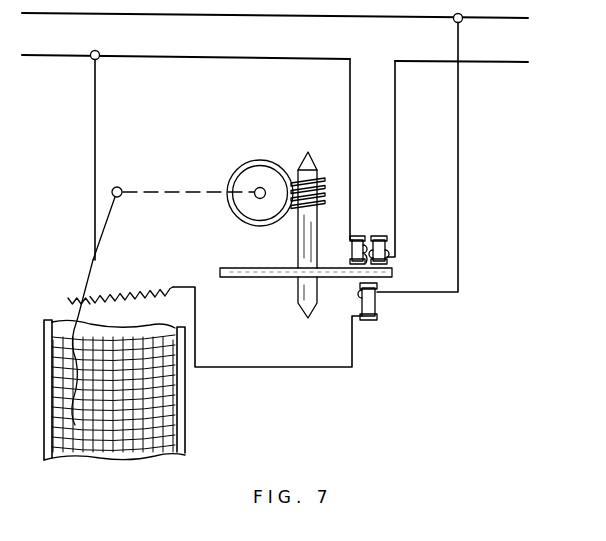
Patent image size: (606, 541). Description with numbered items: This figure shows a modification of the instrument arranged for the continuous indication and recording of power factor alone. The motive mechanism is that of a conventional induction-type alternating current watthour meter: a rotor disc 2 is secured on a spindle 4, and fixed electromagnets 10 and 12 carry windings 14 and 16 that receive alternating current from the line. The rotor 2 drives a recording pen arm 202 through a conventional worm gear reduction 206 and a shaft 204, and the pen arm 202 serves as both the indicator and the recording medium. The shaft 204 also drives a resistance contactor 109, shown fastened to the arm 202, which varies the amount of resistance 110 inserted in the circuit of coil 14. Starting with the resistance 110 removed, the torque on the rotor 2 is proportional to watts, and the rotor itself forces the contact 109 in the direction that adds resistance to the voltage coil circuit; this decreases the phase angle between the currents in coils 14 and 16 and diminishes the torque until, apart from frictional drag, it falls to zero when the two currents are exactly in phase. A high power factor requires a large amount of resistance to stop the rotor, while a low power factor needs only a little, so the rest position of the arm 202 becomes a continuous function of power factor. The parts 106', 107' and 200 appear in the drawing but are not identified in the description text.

The rotor disc 2 is at (252, 267).
The spindle 4 is at (300, 235).
The fixed electromagnet 10 is at (364, 323).
The fixed electromagnet 12 is at (383, 236).
The winding 14 is at (377, 309).
The winding 16 is at (391, 257).
The supply lead 106' is at (331, 149).
The supply lead 107' is at (410, 159).
The resistance contactor 109 is at (93, 299).
The resistance 110 is at (131, 290).
The tank with mesh 200 is at (184, 412).
The pen arm 202 is at (68, 301).
The shaft 204 is at (255, 192).
The worm gear reduction 206 is at (293, 165).